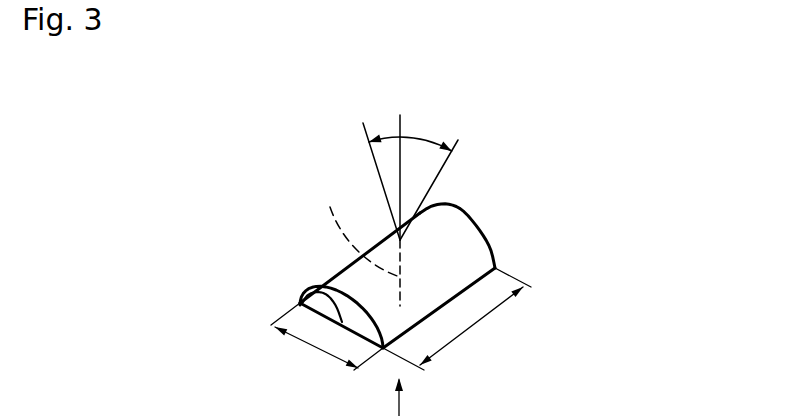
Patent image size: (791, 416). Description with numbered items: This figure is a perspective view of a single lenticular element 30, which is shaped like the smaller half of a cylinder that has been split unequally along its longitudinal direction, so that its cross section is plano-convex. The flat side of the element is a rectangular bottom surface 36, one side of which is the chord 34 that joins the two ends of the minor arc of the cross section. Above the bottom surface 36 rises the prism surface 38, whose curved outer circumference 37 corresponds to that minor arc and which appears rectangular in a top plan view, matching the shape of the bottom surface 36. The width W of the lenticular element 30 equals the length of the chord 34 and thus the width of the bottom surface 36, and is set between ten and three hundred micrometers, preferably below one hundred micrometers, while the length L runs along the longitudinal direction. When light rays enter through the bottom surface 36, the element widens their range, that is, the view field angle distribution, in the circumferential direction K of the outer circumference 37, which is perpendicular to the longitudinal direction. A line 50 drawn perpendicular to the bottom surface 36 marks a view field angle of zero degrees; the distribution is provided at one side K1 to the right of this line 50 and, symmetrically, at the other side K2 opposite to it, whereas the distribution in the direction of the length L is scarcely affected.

The lenticular element 30 is at (106, 206).
The chord 34 is at (245, 283).
The bottom surface 36 is at (304, 301).
The outer circumference 37 is at (470, 243).
The prism surface 38 is at (340, 271).
The line perpendicular to the bottom surface 50 is at (351, 236).
The circumferential direction K is at (537, 41).
The one side K1 is at (417, 147).
The other side K2 is at (398, 136).
The width W is at (327, 345).
The length L is at (457, 319).